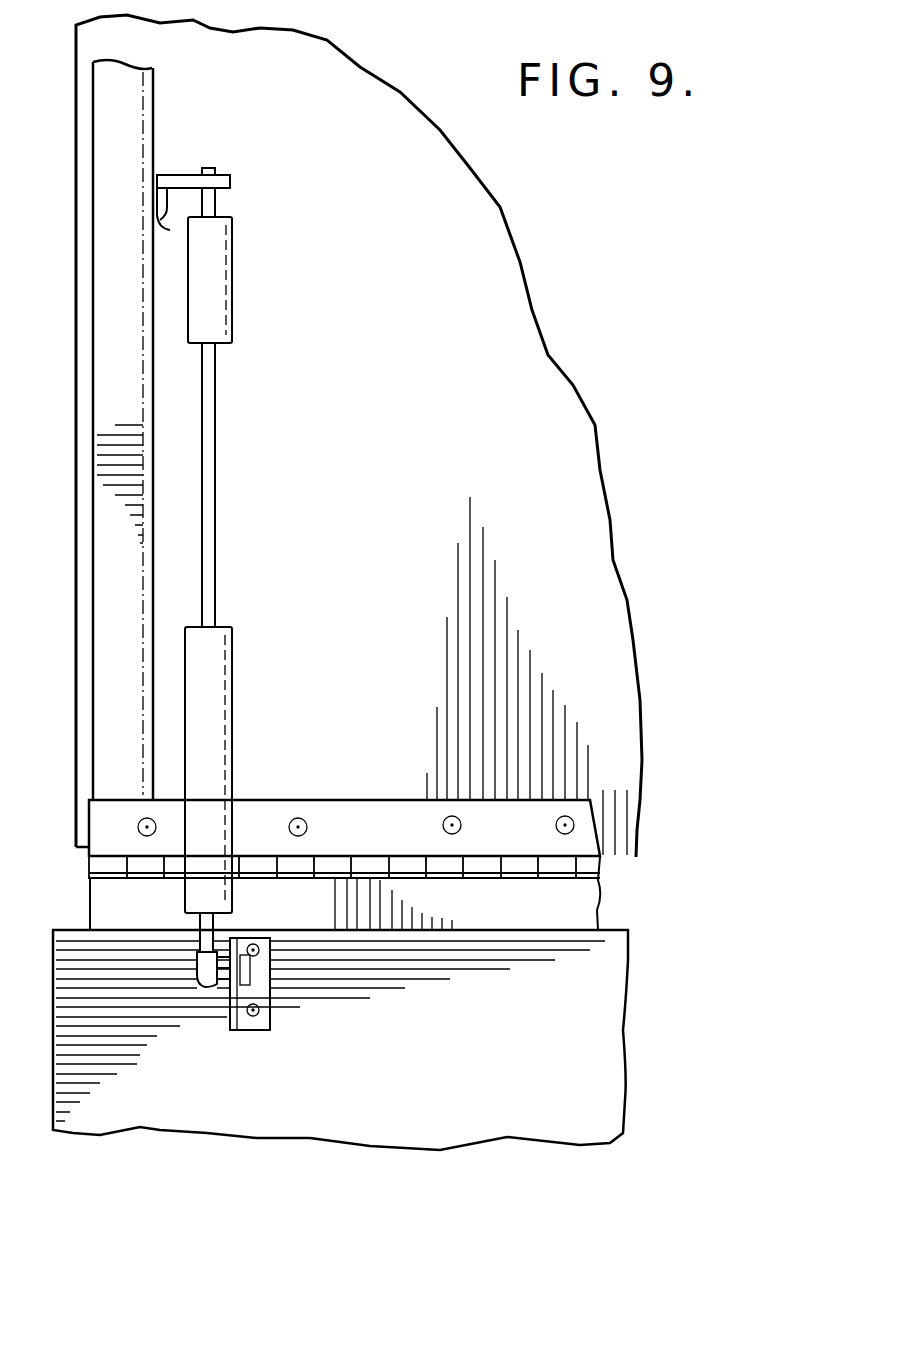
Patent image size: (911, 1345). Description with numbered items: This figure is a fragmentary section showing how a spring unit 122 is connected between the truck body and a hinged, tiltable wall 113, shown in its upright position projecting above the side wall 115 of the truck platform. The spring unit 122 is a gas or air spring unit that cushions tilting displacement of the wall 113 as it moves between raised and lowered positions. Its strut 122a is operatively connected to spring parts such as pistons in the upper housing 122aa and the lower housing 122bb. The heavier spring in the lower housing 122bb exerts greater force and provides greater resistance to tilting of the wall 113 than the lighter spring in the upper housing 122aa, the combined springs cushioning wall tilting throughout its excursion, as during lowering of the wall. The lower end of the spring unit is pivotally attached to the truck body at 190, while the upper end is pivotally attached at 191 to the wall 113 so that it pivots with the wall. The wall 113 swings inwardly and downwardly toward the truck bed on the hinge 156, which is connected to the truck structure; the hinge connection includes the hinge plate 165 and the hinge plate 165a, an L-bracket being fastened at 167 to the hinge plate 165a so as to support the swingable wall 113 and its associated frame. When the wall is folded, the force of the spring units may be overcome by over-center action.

The wall 113 is at (540, 355).
The side wall of the truck platform 115 is at (307, 1137).
The spring unit 122 is at (298, 530).
The strut 122a is at (215, 402).
The upper housing 122aa is at (232, 283).
The lower housing 122bb is at (215, 722).
The hinge 156 is at (517, 868).
The hinge plate 165 is at (573, 918).
The hinge plate 165a is at (441, 781).
The fastening location 167 is at (545, 826).
The pivotal attachment of spring unit lower end 190 is at (207, 997).
The pivotal attachment of spring unit upper end 191 is at (242, 188).